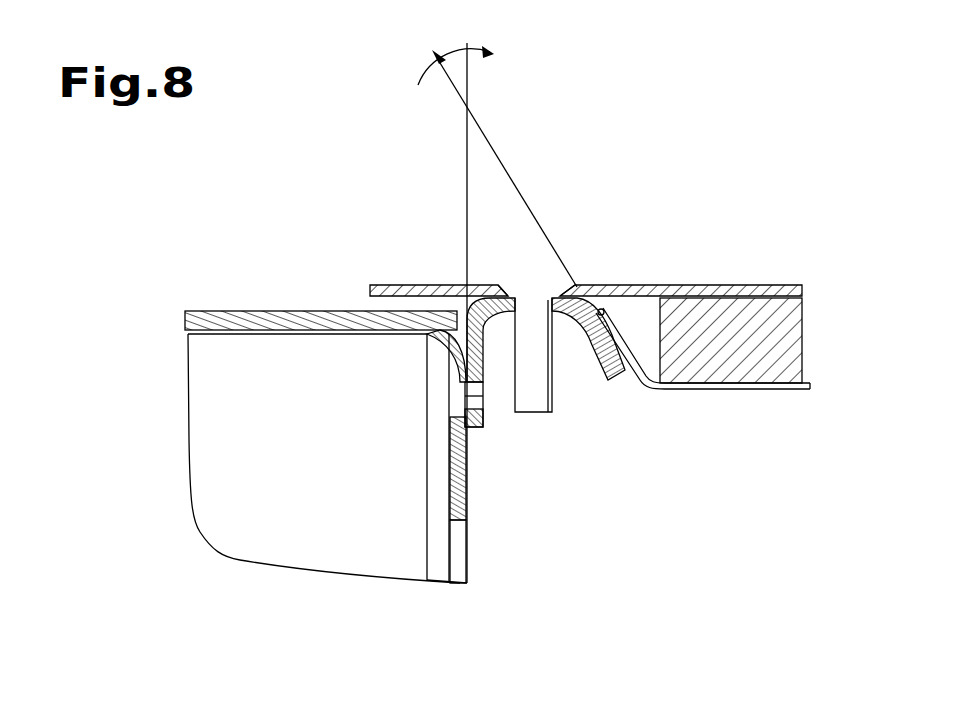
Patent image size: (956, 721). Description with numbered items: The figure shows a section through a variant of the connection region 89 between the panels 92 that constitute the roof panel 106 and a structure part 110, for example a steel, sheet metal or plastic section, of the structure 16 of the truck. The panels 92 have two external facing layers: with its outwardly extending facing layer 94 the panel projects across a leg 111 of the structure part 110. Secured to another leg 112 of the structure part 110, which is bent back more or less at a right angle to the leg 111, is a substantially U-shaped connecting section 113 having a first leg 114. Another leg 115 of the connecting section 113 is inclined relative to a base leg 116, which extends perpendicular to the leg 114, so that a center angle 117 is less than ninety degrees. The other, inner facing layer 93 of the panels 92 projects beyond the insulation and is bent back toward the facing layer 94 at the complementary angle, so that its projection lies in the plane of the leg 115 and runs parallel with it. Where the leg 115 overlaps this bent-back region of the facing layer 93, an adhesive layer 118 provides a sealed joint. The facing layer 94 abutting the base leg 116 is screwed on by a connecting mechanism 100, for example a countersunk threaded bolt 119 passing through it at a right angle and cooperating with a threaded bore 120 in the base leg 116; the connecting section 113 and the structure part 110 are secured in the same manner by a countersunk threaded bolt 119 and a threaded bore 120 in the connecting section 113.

The structure 16 is at (174, 560).
The connection region 89 is at (596, 192).
The panels 92 is at (694, 252).
The facing layer 93 is at (775, 313).
The facing layer 94 is at (427, 285).
The connecting mechanism 100 is at (532, 287).
The roof panel 106 is at (832, 283).
The structure part 110 is at (268, 290).
The leg 111 is at (335, 312).
The leg 112 is at (458, 468).
The connecting section 113 is at (493, 285).
The first leg 114 is at (482, 312).
The leg 115 is at (620, 378).
The base leg 116 is at (575, 285).
The center angle 117 is at (533, 95).
The adhesive layer 118 is at (603, 307).
The countersunk threaded bolt 119 is at (460, 387).
The threaded bore 120 is at (453, 417).